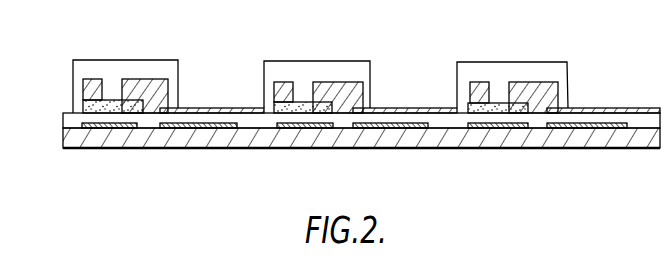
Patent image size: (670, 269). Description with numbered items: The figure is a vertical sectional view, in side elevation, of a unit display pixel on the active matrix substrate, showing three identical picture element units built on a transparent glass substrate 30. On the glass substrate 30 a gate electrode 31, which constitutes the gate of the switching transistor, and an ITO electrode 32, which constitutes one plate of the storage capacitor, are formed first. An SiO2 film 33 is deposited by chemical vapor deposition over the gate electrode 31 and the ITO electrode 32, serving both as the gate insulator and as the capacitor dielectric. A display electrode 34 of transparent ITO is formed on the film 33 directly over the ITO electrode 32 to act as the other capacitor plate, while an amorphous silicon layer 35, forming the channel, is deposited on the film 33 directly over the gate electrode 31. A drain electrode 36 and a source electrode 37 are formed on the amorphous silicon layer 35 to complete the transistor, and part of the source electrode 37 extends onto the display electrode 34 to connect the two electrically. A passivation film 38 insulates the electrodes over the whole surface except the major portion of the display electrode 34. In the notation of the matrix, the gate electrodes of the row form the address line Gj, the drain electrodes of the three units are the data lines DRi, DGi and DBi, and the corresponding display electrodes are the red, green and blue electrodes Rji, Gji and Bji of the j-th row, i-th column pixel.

The transparent glass substrate 30 is at (608, 147).
The gate electrode 31 is at (90, 142).
The ITO electrode 32 is at (205, 130).
The SiO2 film 33 is at (63, 124).
The display electrode 34 is at (410, 87).
The amorphous silicon layer 35 is at (88, 106).
The drain electrode 36 is at (259, 57).
The source electrode 37 is at (153, 79).
The passivation film 38 is at (128, 60).
The address line Gj is at (118, 129).
The data line for red display electrodes DRi is at (97, 73).
The data line for green display electrodes DGi is at (287, 80).
The data line for blue display electrodes DBi is at (479, 60).
The red display electrode Rji is at (212, 93).
The green display electrode Gji is at (405, 95).
The blue display electrode Bji is at (603, 98).